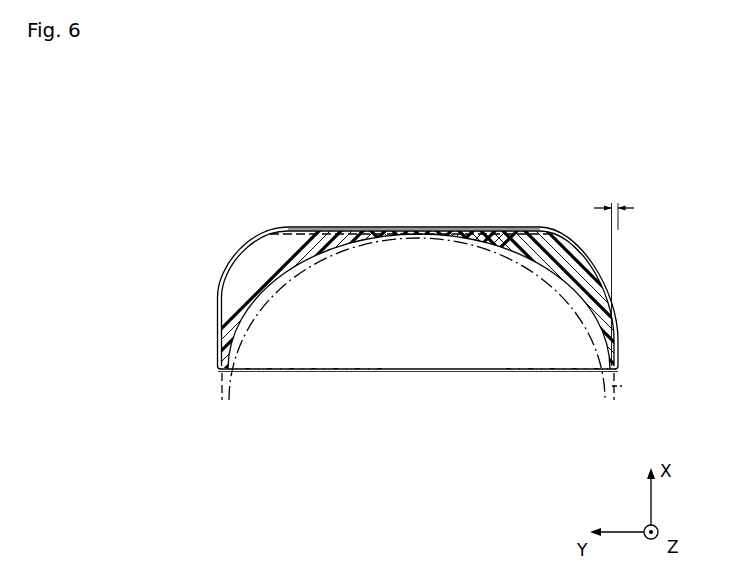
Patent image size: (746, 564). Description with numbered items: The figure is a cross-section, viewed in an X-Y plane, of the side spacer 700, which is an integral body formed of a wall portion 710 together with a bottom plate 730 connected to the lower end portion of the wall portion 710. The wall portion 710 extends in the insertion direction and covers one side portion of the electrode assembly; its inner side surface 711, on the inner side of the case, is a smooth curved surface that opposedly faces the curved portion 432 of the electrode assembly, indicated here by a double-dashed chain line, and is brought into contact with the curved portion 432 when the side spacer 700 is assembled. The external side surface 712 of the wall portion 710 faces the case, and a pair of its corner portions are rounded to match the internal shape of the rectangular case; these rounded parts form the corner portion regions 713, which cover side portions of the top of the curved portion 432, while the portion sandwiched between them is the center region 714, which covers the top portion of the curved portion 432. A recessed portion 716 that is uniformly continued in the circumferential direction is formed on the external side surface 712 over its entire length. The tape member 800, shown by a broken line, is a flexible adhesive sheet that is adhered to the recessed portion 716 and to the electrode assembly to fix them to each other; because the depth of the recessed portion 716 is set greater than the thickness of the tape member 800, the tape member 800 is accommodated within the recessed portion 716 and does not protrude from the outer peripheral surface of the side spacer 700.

The side spacer 700 is at (357, 169).
The wall portion 710 is at (219, 237).
The inner side surface 711 is at (578, 330).
The external side surface 712 is at (325, 229).
The corner portion regions 713 is at (240, 264).
The center region 714 is at (421, 234).
The recessed portion 716 is at (556, 227).
The bottom plate 730 is at (387, 362).
The curved portion 432 is at (231, 387).
The tape member 800 is at (616, 387).